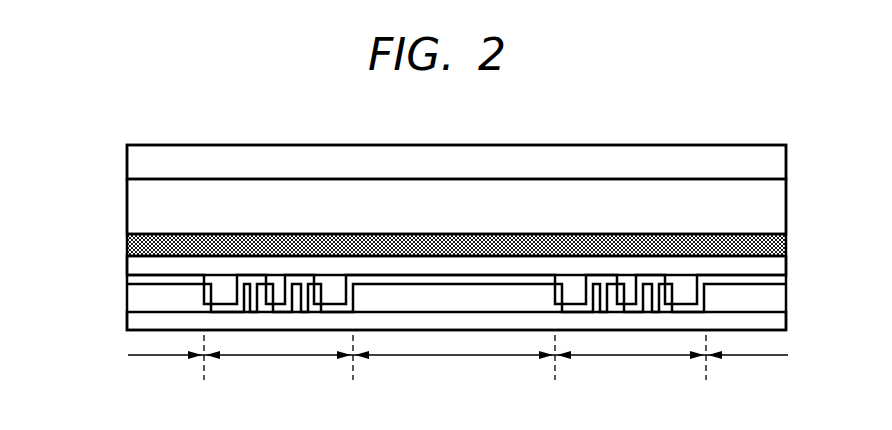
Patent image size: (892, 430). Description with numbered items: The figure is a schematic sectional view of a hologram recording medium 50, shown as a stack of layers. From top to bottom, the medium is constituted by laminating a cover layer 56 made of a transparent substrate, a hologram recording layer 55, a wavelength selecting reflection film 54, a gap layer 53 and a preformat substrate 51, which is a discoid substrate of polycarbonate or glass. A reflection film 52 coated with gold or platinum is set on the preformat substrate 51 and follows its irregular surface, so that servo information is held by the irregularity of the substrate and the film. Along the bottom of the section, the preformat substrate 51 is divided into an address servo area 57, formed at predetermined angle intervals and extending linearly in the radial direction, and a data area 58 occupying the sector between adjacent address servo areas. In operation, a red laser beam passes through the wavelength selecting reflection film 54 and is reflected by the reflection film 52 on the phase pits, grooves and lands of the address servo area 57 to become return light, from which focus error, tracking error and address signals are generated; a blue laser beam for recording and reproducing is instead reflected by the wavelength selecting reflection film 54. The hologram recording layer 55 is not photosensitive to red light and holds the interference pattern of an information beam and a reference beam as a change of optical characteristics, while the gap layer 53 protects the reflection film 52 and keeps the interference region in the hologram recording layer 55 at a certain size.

The hologram recording medium 50 is at (638, 130).
The preformat substrate 51 is at (127, 310).
The reflection film 52 is at (127, 280).
The gap layer 53 is at (127, 262).
The wavelength selecting reflection film 54 is at (127, 238).
The hologram recording layer 55 is at (127, 205).
The cover layer 56 is at (127, 159).
The address servo area 57 is at (281, 357).
The data area 58 is at (159, 357).